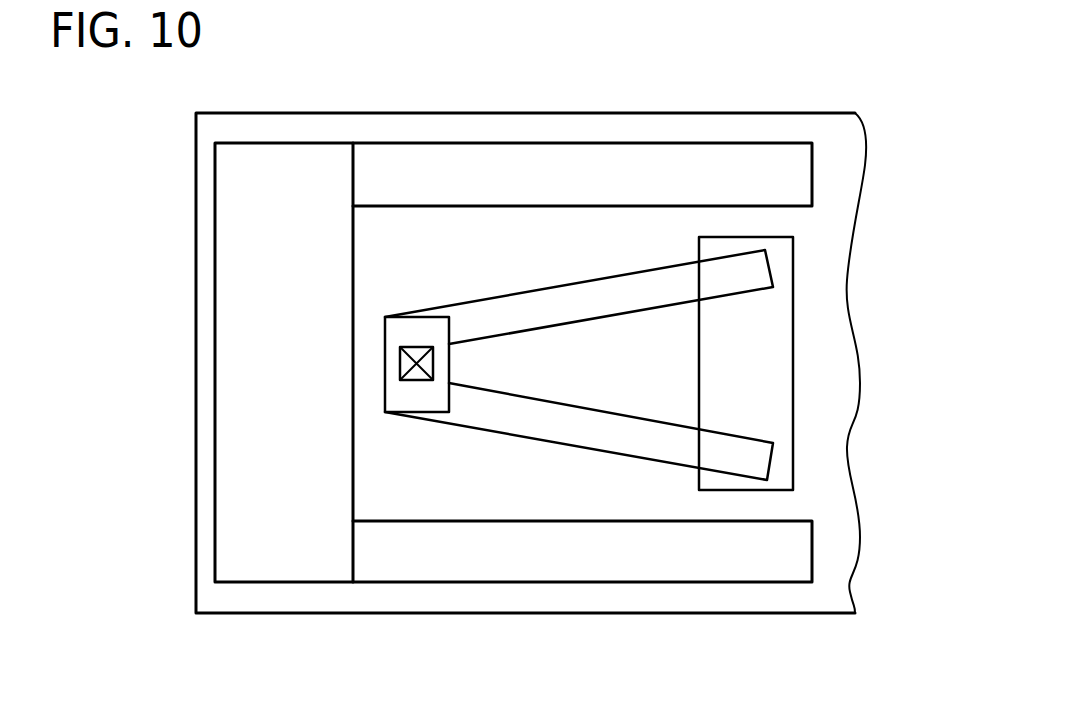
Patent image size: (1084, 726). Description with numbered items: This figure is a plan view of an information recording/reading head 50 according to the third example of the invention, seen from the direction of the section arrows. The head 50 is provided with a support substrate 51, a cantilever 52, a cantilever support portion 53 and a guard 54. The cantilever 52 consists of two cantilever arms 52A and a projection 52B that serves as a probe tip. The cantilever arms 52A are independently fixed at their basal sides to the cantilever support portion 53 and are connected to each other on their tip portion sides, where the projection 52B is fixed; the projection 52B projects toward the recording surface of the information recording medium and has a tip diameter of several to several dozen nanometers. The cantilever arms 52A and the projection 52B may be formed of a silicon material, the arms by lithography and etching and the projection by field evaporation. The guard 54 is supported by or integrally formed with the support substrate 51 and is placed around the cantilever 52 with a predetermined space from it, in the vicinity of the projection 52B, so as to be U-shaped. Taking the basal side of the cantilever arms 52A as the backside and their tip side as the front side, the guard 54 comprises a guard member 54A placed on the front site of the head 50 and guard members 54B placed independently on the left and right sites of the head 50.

The information recording/reading head 50 is at (880, 95).
The support substrate 51 is at (443, 598).
The cantilever 52 is at (578, 252).
The cantilever arms 52A is at (740, 285).
The projection (probe tip) 52B is at (405, 373).
The cantilever support portion 53 is at (782, 378).
The guard 54 is at (213, 180).
The guard member 54A is at (237, 505).
The guard members 54B is at (493, 153).